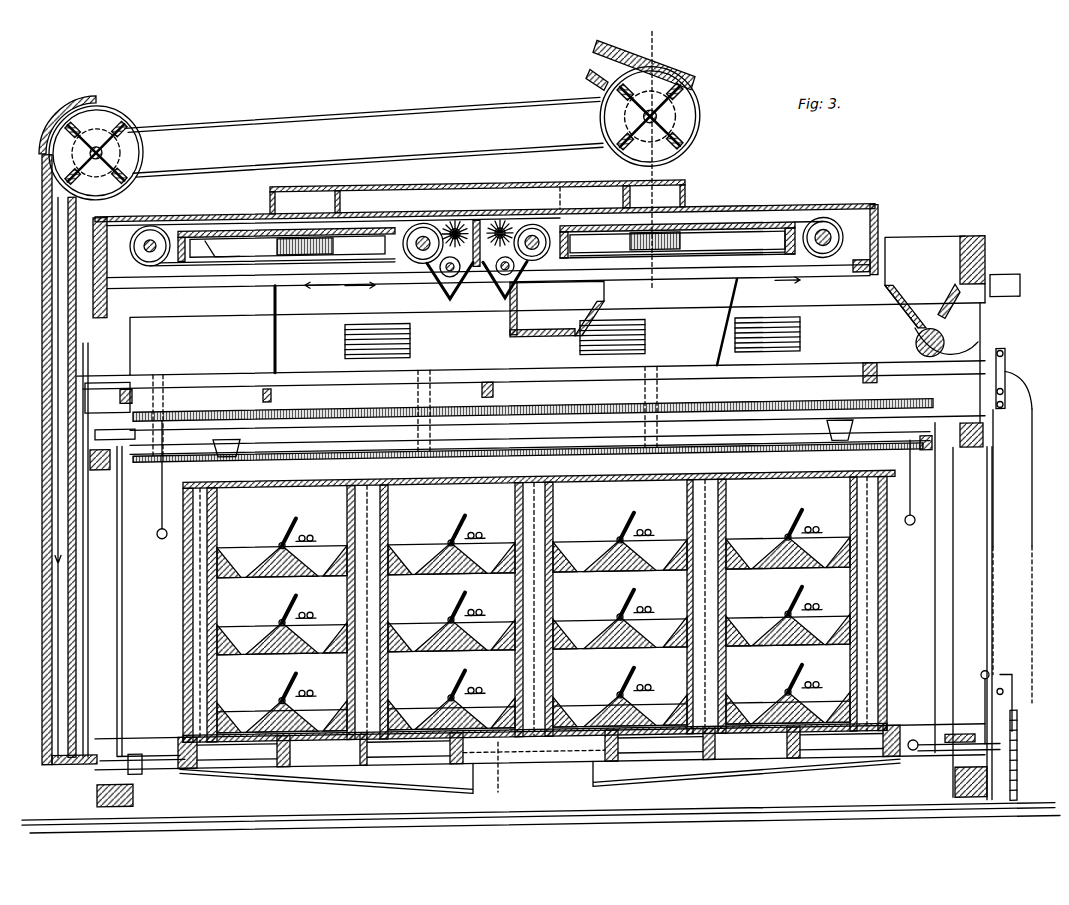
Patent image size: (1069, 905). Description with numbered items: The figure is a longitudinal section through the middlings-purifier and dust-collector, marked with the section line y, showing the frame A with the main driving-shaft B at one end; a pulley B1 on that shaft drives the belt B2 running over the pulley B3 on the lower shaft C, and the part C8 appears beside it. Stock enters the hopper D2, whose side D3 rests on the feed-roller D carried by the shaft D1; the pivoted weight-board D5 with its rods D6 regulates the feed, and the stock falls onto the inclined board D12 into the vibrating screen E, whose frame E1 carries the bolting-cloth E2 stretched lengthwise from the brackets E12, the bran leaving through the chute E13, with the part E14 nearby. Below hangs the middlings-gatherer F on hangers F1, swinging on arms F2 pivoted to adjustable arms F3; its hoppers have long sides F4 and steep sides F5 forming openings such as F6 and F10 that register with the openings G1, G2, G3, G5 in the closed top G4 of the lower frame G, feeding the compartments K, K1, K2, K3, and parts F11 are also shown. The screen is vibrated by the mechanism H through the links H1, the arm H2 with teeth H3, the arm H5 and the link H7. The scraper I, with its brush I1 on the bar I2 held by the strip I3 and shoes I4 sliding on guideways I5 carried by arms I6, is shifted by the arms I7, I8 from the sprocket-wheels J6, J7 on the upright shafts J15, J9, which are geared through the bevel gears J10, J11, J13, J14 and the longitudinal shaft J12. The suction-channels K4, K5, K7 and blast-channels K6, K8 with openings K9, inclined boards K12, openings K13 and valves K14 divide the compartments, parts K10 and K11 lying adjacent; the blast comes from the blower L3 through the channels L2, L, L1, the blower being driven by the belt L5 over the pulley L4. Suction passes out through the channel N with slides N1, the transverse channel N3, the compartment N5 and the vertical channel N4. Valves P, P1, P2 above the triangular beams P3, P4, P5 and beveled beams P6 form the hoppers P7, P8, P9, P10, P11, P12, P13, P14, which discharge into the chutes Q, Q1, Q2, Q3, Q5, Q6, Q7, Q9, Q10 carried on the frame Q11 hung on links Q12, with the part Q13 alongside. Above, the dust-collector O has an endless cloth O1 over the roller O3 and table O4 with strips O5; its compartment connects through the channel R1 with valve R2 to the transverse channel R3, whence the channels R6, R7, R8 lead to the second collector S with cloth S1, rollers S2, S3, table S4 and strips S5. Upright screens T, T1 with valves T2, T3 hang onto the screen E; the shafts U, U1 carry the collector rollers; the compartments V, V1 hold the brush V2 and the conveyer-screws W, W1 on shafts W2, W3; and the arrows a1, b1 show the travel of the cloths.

The frame A is at (1024, 326).
The main driving-shaft B is at (1016, 412).
The pulley B1 is at (1045, 419).
The belt B2 is at (1032, 510).
The pulley B3 is at (1032, 650).
The shaft C is at (1020, 700).
The rack bar C8 is at (1027, 755).
The feed-roller D is at (916, 355).
The feed-roller shaft D1 is at (917, 345).
The hopper D2 is at (935, 282).
The hopper side D3 is at (905, 313).
The weight-board D5 is at (957, 303).
The rods D6 is at (1002, 288).
The inclined board D12 is at (1006, 351).
The vibrating screen E is at (533, 397).
The screen frame E1 is at (634, 382).
The bolting-cloth E2 is at (545, 387).
The brackets E12 is at (99, 378).
The chute E13 is at (83, 478).
The screen end plate E14 is at (128, 401).
The middlings-gatherer F is at (532, 438).
The hangers F1 is at (164, 440).
The arms F2 is at (912, 488).
The arm F3 is at (916, 528).
The long inclined side F4 is at (536, 468).
The short steep inclined side F5 is at (456, 456).
The opening F6 is at (583, 459).
The opening F10 is at (343, 475).
The shaker link F11 is at (673, 448).
The frame G is at (424, 536).
The opening G1 is at (751, 497).
The opening G2 is at (644, 496).
The opening G3 is at (428, 500).
The closed top G4 is at (816, 488).
The opening G5 is at (337, 511).
The vibrating mechanism H is at (963, 365).
The links H1 is at (930, 740).
The arm H2 is at (1008, 381).
The teeth H3 is at (1005, 650).
The arm H5 is at (1046, 403).
The link H7 is at (1011, 449).
The conveyor I is at (610, 445).
The brush I1 is at (758, 405).
The bar I2 is at (458, 412).
The strip I3 is at (880, 437).
The shoes I4 is at (252, 440).
The guideways I5 is at (200, 455).
The arms I6 is at (222, 502).
The arm I7 is at (97, 433).
The arm I8 is at (965, 392).
The sprocket-wheel J6 is at (97, 441).
The sprocket-wheel J7 is at (945, 445).
The upright shaft J9 is at (936, 490).
The bevel gear-wheel J10 is at (962, 740).
The bevel gear-wheel J11 is at (955, 770).
The shaft J12 is at (910, 765).
The bevel gear-wheel J13 is at (136, 786).
The bevel gear-wheel J14 is at (154, 745).
The upright shaft J15 is at (172, 672).
The compartment K is at (813, 598).
The compartment K1 is at (583, 516).
The compartment K2 is at (490, 518).
The compartment K3 is at (327, 530).
The suction-channel K4 is at (871, 550).
The suction-channel K5 is at (202, 573).
The blast-channel K6 is at (710, 494).
The suction-channel K7 is at (537, 552).
The blast-channel K8 is at (367, 593).
The openings K9 is at (542, 556).
The lever K10 is at (595, 588).
The lever K11 is at (538, 565).
The inclined boards K12 is at (543, 638).
The channels K13 is at (539, 618).
The valves K14 is at (876, 611).
The channel L is at (707, 683).
The channel L1 is at (371, 683).
The channel L2 is at (52, 636).
The blower L3 is at (105, 112).
The pulley L4 is at (125, 122).
The belt L5 is at (368, 115).
The channel N is at (668, 97).
The slides N1 is at (700, 75).
The channel N3 is at (510, 302).
The channel N4 is at (582, 130).
The compartment N5 is at (691, 240).
The dust-collector O is at (585, 283).
The endless traveling cloth O1 is at (538, 238).
The roller O3 is at (828, 240).
The table O4 is at (736, 212).
The longitudinal strips O5 is at (760, 249).
The valves P is at (551, 532).
The valves P1 is at (559, 626).
The valves P2 is at (524, 690).
The triangular beam P3 is at (313, 554).
The triangular beam P4 is at (546, 620).
The triangular beam P5 is at (622, 631).
The beveled beams P6 is at (540, 605).
The hopper P7 is at (829, 707).
The hopper P8 is at (744, 709).
The hopper P9 is at (670, 710).
The hopper P10 is at (573, 711).
The hopper P11 is at (500, 713).
The hopper P12 is at (410, 714).
The hopper P13 is at (332, 716).
The hopper P14 is at (237, 717).
The chute Q is at (540, 747).
The chute Q1 is at (772, 773).
The chute Q2 is at (751, 724).
The chute Q3 is at (676, 739).
The chute Q5 is at (541, 741).
The chute Q6 is at (416, 743).
The chute Q7 is at (322, 782).
The chute Q9 is at (255, 768).
The chute Q10 is at (420, 780).
The frame Q11 is at (215, 770).
The links Q12 is at (900, 673).
The trough Q13 is at (172, 700).
The channel R1 is at (682, 241).
The valve R2 is at (746, 183).
The channel R3 is at (700, 207).
The channel R6 is at (488, 205).
The channel R7 is at (278, 187).
The channels R8 is at (306, 279).
The dust-collector S is at (272, 280).
The endless traveling cloth S1 is at (193, 264).
The roller S2 is at (440, 262).
The roller S3 is at (132, 240).
The table S4 is at (213, 211).
The longitudinal strips S5 is at (286, 245).
The upright screen T is at (724, 345).
The upright screen T1 is at (280, 340).
The valve T2 is at (740, 284).
The valve T3 is at (315, 289).
The shaft U is at (533, 240).
The shaft U1 is at (425, 238).
The compartment V is at (502, 230).
The compartment V1 is at (457, 230).
The revolving brush V2 is at (496, 254).
The conveyer-screw W is at (503, 275).
The conveyer-screw W1 is at (470, 277).
The shaft W2 is at (520, 278).
The shaft W3 is at (450, 276).
The arrow a1 is at (776, 281).
The arrow b1 is at (360, 288).
The section line y is at (579, 409).